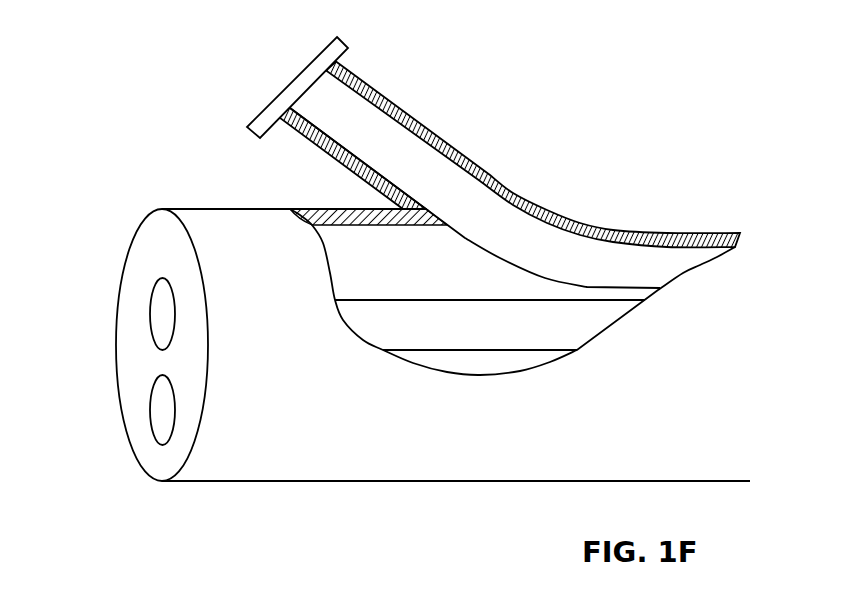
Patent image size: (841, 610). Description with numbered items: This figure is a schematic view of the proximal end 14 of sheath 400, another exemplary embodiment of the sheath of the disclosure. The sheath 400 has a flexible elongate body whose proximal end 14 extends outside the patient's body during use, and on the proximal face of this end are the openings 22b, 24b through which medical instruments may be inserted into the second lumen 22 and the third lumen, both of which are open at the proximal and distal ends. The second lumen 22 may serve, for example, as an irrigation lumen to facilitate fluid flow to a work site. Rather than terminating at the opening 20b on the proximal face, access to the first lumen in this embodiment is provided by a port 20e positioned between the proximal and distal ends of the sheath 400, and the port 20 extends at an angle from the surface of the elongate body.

The proximal end 14 is at (131, 224).
The port 20 is at (517, 240).
The opening 20b is at (289, 84).
The port 20e is at (410, 116).
The second lumen 22 is at (550, 312).
The opening 22b is at (161, 306).
The opening 24b is at (161, 412).
The sheath 400 is at (478, 486).